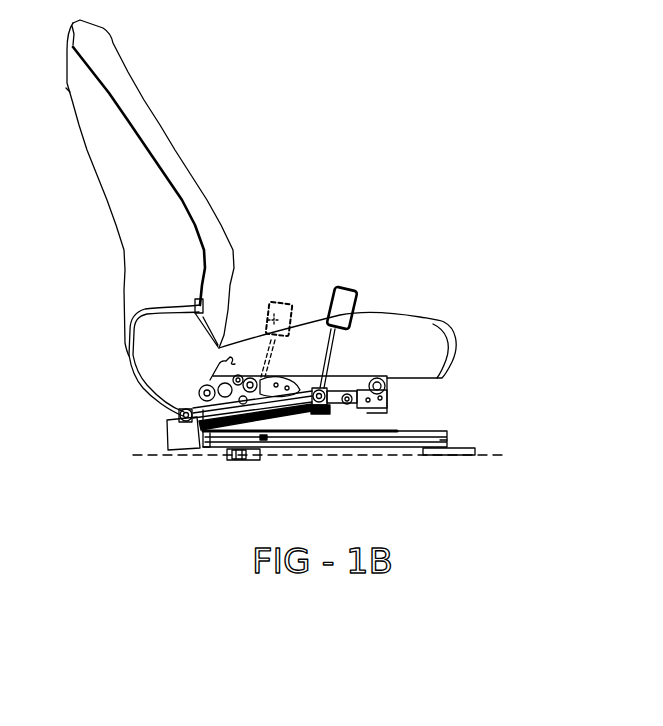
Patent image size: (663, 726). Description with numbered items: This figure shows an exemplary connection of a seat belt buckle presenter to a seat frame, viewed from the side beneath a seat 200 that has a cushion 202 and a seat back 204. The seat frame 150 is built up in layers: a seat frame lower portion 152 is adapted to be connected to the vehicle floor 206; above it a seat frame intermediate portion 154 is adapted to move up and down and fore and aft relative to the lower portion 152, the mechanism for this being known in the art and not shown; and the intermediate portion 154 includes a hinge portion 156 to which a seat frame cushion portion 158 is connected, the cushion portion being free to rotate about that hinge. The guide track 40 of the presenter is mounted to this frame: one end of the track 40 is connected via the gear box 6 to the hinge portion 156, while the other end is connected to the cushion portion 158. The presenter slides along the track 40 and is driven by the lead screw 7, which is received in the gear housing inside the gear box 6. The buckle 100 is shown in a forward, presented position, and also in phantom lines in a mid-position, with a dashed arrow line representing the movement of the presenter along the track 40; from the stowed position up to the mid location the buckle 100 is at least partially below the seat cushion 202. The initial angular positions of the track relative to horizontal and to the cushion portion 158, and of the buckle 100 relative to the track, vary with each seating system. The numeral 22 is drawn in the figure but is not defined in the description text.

The seat back 204 is at (130, 267).
The cushion 202 is at (433, 325).
The buckle 100 is at (263, 300).
The seat 200 is at (380, 273).
The seat frame 150 is at (348, 452).
The seat frame cushion portion 158 is at (390, 412).
The seat frame intermediate portion 154 is at (400, 428).
The guide track 40 is at (270, 403).
The pivot block 22 is at (322, 415).
The lead screw 7 is at (246, 425).
The seat frame lower portion 152 is at (230, 458).
The hinge portion 156 is at (179, 414).
The gear box 6 is at (167, 433).
The vehicle floor 206 is at (133, 457).